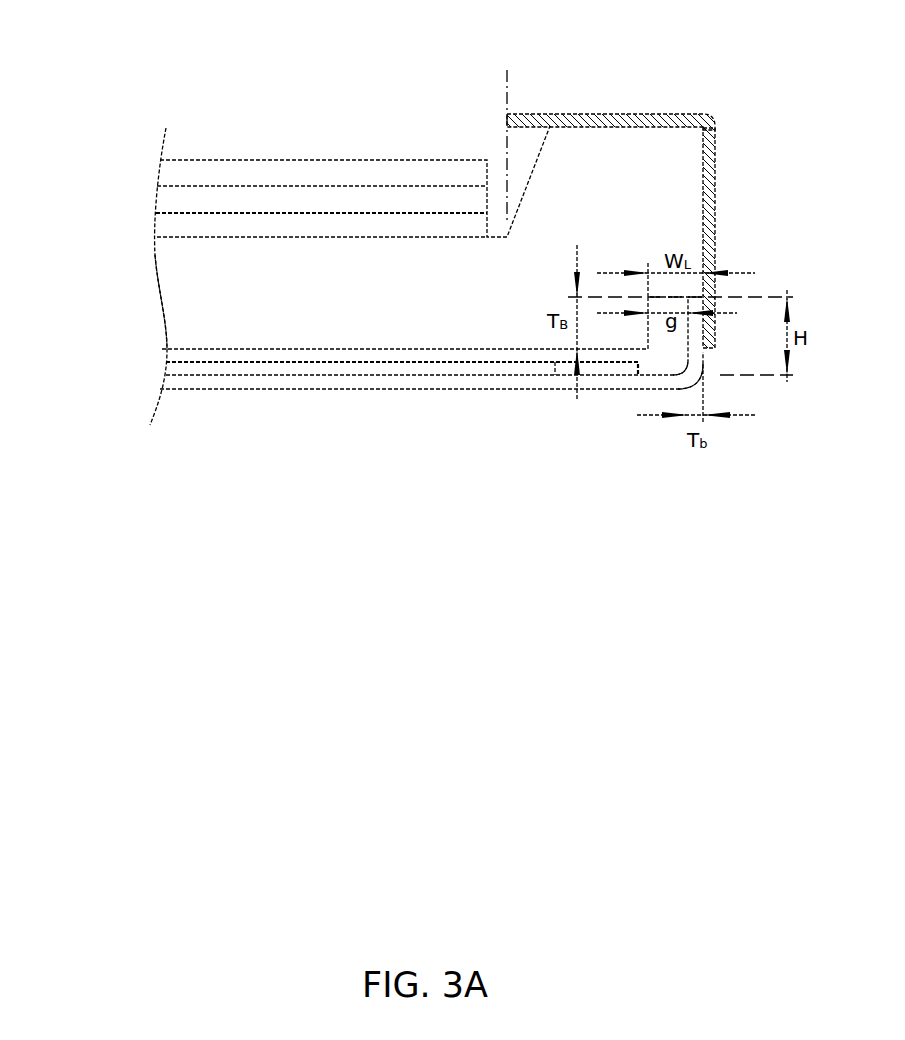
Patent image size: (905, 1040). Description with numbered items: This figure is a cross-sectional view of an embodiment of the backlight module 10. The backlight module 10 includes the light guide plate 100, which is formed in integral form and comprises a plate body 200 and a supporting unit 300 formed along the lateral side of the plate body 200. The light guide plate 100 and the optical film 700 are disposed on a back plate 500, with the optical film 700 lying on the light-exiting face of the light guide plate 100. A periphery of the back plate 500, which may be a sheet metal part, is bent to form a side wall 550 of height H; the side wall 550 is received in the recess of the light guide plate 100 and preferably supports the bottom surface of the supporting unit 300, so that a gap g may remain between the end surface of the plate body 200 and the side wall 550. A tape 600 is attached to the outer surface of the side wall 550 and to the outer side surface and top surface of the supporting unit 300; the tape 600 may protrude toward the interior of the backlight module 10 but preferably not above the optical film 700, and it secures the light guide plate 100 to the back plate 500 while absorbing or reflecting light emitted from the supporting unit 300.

The backlight module 10 is at (282, 51).
The light guide plate 100 is at (160, 283).
The plate body 200 is at (402, 322).
The supporting unit 300 is at (685, 217).
The back plate 500 is at (160, 381).
The side wall 550 is at (696, 362).
The tape 600 is at (653, 114).
The optical film 700 is at (140, 153).